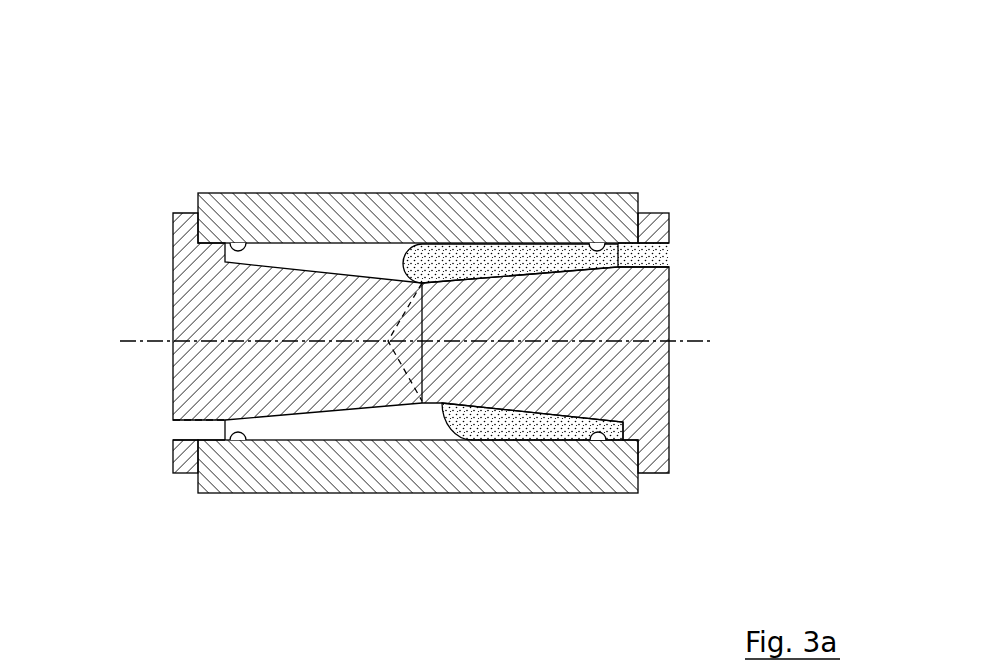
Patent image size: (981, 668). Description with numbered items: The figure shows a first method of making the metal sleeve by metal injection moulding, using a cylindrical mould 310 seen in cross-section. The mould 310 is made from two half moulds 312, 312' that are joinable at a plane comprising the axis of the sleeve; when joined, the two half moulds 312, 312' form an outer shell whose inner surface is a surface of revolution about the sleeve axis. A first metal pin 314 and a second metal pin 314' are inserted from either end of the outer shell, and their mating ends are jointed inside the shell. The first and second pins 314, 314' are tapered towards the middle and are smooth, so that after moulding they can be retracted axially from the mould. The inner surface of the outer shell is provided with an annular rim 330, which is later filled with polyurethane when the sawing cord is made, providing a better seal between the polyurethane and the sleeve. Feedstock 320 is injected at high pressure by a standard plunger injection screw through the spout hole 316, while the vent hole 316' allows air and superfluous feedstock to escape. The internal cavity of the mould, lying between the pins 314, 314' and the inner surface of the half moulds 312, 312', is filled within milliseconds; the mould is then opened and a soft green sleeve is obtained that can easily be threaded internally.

The cylindrical mould 310 is at (170, 110).
The half mould 312 is at (418, 185).
The half mould 312' is at (418, 504).
The first metal pin 314 is at (486, 343).
The second metal pin 314' is at (120, 358).
The spout hole 316 is at (708, 255).
The vent hole 316' is at (134, 433).
The feedstock 320 is at (469, 284).
The annular rim 330 is at (477, 405).